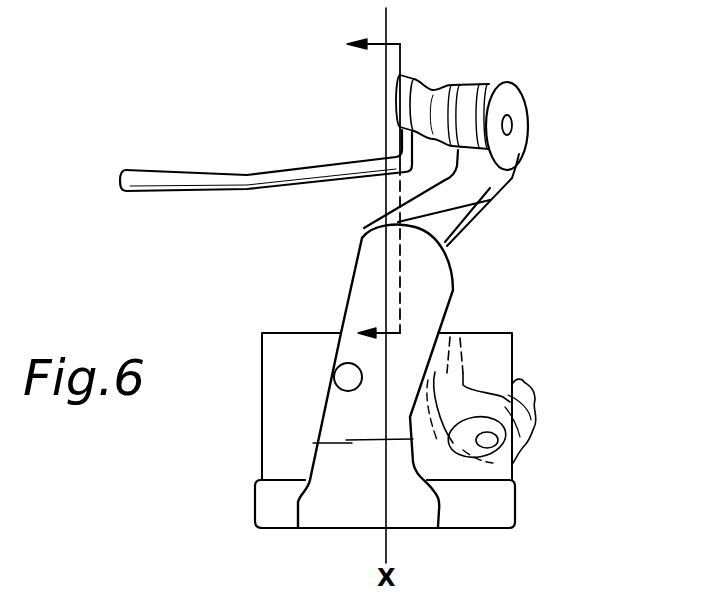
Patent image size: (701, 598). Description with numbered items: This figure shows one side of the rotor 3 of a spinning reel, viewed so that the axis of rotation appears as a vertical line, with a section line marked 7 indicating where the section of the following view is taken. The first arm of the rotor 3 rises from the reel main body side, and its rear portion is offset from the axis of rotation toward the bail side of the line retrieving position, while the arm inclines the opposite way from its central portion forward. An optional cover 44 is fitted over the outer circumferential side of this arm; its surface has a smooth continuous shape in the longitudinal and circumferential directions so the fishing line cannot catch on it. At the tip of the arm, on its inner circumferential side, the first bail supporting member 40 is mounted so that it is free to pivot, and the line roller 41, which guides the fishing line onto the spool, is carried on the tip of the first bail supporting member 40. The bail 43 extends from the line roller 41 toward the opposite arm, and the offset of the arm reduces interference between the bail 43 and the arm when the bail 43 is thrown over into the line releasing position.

The rotor 3 is at (515, 503).
The section line 7- 7 is at (358, 189).
The first bail supporting member 40 is at (490, 200).
The line roller 41 is at (442, 77).
The bail 43 is at (247, 174).
The cover 44 is at (440, 293).